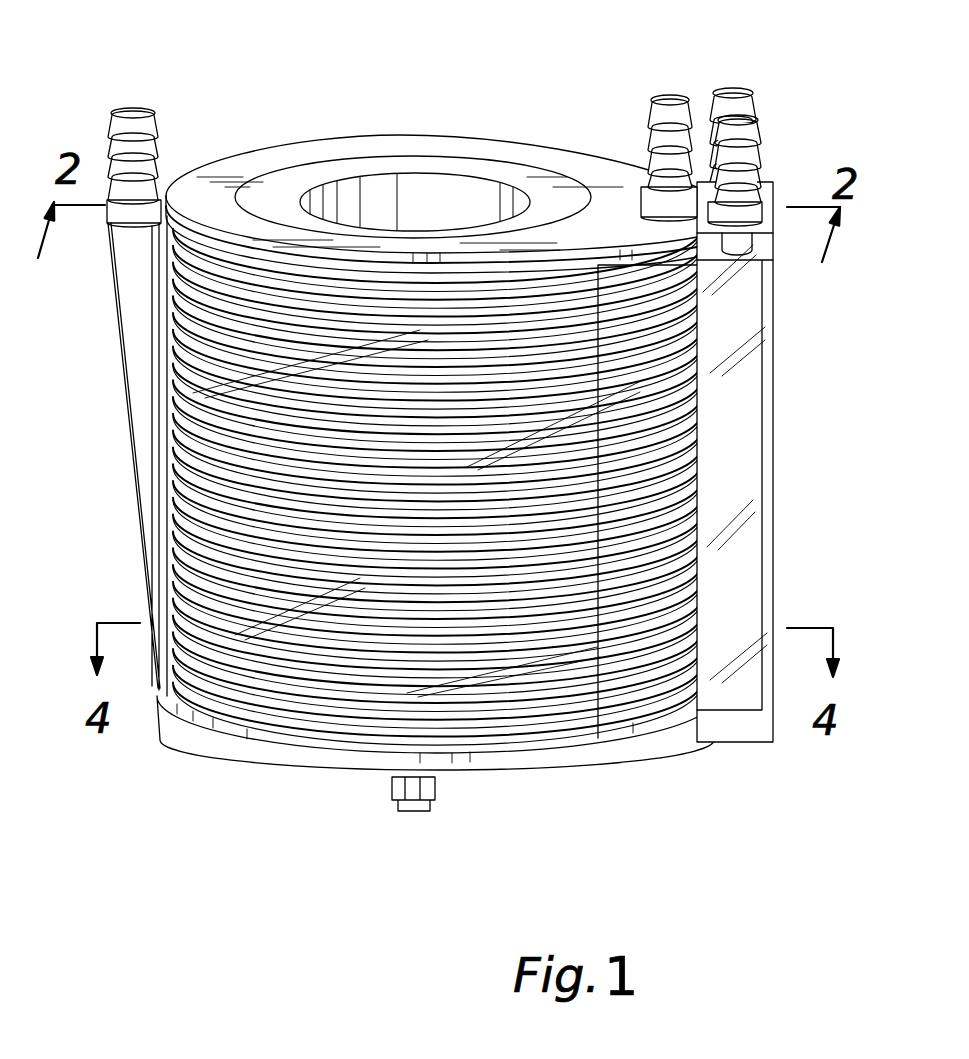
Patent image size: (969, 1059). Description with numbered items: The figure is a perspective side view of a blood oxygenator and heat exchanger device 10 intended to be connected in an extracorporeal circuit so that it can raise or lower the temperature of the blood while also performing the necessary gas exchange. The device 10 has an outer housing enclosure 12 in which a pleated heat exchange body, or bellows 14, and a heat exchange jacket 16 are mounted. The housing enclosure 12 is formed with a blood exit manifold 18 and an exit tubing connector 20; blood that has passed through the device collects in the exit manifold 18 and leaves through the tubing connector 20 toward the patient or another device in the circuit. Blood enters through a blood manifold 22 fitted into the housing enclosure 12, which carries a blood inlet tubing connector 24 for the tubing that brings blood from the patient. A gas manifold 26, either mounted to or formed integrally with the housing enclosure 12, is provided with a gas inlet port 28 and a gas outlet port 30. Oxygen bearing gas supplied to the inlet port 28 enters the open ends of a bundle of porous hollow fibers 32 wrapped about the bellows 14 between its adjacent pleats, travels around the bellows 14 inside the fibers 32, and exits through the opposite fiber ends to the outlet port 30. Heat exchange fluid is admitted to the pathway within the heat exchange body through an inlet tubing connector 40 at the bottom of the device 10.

The heat exchanger/oxygenator device 10 is at (459, 431).
The outer housing enclosure 12 is at (431, 163).
The heat exchange body, or bellows 14 is at (183, 668).
The heat exchange jacket 16 is at (352, 158).
The blood exit manifold 18 is at (125, 400).
The exit tubing connector 20 is at (166, 112).
The blood manifold 22 is at (628, 228).
The blood inlet tubing connector 24 is at (643, 110).
The gas manifold 26 is at (778, 578).
The gas inlet port 28 is at (707, 97).
The gas outlet port 30 is at (757, 128).
The hollow fibers 32 is at (493, 708).
The inlet tubing connector 40 is at (398, 813).